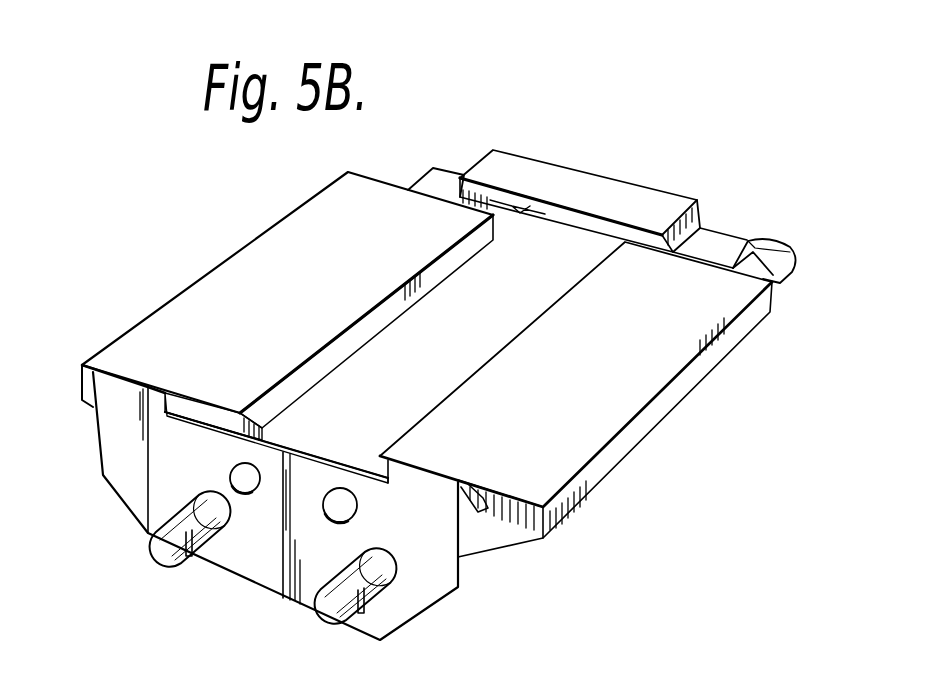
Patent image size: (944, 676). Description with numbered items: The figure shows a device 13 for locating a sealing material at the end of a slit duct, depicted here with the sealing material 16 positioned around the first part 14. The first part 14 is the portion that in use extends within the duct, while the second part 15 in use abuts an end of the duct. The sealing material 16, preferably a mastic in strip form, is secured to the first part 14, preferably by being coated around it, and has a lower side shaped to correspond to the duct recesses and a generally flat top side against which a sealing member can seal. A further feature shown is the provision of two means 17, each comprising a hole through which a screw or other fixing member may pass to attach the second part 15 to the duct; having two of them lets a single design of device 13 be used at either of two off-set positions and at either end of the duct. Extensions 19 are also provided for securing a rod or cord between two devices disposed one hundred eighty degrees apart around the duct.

The device for locating a sealing material 13 is at (688, 167).
The first part 14 is at (435, 175).
The second part 15 is at (140, 478).
The sealing material 16 is at (232, 277).
The means for attaching 17 is at (245, 478).
The extensions 19 is at (168, 552).